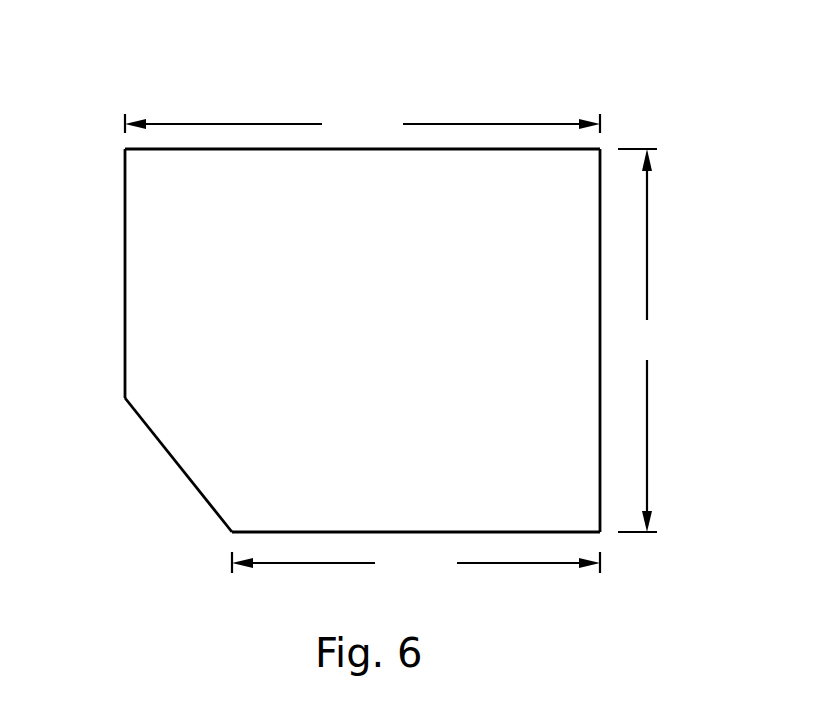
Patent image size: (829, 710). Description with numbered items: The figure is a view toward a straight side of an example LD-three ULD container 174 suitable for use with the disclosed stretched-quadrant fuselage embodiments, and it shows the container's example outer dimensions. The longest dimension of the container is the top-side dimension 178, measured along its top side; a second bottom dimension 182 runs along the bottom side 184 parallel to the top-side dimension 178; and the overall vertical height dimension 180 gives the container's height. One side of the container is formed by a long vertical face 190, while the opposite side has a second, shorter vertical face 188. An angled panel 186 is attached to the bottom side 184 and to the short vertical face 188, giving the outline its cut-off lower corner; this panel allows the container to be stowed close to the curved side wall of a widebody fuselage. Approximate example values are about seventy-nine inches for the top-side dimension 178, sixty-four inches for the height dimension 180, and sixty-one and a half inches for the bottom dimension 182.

The LD-3 ULD container 174 is at (402, 279).
The dimension D1 178 is at (438, 124).
The dimension D2 180 is at (647, 233).
The dimension D3 182 is at (477, 563).
The bottom side 184 is at (362, 532).
The angled panel 186 is at (180, 468).
The short vertical face 188 is at (126, 285).
The long vertical face 190 is at (601, 228).